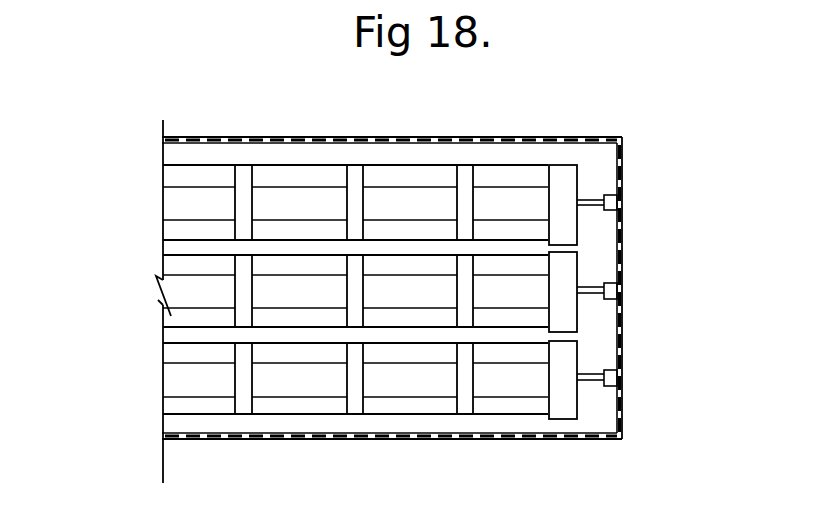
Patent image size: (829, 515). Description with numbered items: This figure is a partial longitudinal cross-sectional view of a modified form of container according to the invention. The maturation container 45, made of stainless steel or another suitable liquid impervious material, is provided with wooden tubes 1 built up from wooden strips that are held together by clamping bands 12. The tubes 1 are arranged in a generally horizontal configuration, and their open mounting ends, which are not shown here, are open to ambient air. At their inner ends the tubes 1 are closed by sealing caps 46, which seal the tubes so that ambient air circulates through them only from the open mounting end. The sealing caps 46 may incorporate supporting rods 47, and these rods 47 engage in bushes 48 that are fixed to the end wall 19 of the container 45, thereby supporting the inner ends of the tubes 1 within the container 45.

The wooden tube 1 is at (490, 207).
The clamping band 12 is at (247, 170).
The maturation container 45 is at (358, 152).
The sealing cap 46 is at (563, 178).
The end wall 19 is at (622, 197).
The supporting rod 47 is at (592, 285).
The bush 48 is at (617, 296).